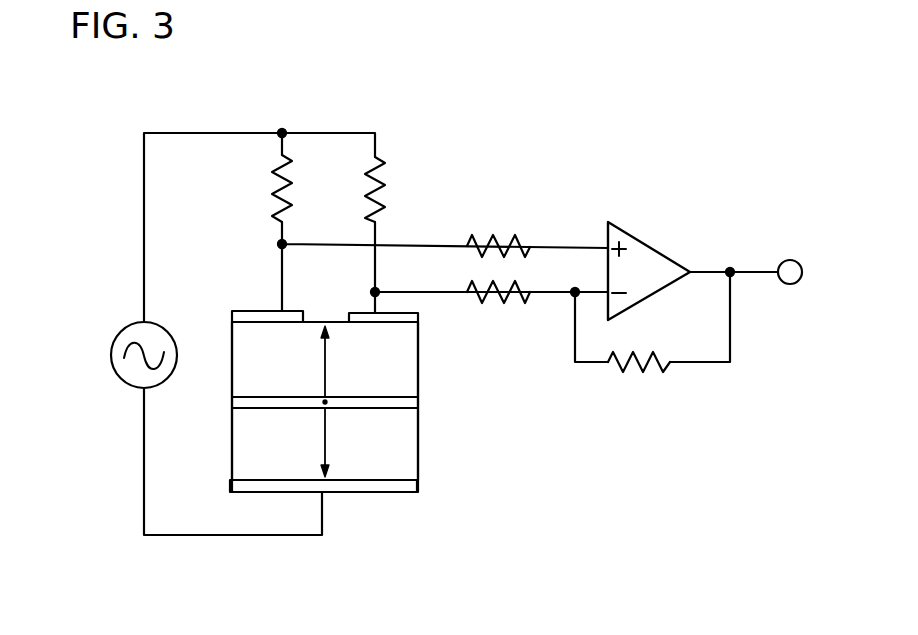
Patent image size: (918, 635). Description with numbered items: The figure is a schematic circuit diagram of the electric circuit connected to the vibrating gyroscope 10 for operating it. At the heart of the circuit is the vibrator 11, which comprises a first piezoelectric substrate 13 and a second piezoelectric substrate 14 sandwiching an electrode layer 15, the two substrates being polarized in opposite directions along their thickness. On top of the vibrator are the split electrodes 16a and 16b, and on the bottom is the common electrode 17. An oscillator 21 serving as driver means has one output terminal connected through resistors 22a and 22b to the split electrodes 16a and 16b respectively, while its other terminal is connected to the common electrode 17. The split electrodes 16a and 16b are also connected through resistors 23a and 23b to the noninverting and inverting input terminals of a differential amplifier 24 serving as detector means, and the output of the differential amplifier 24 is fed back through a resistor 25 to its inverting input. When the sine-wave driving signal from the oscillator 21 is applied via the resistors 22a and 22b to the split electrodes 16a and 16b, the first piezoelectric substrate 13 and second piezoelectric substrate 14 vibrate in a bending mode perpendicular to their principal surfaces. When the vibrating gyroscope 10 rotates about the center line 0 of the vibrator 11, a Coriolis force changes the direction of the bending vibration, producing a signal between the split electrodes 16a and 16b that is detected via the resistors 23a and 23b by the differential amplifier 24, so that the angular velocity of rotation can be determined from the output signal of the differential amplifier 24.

The vibrating gyroscope 10 is at (540, 142).
The vibrator 11 is at (326, 322).
The first piezoelectric substrate 13 is at (245, 366).
The second piezoelectric substrate 14 is at (257, 457).
The electrode layer 15 is at (240, 404).
The split electrode 16a is at (243, 313).
The split electrode 16b is at (410, 317).
The common electrode 17 is at (375, 487).
The center line 0 is at (323, 402).
The oscillator 21 is at (114, 340).
The resistor 22a is at (289, 162).
The resistor 22b is at (382, 190).
The resistor 23a is at (513, 244).
The resistor 23b is at (517, 302).
The differential amplifier 24 is at (643, 257).
The resistor 25 is at (653, 367).